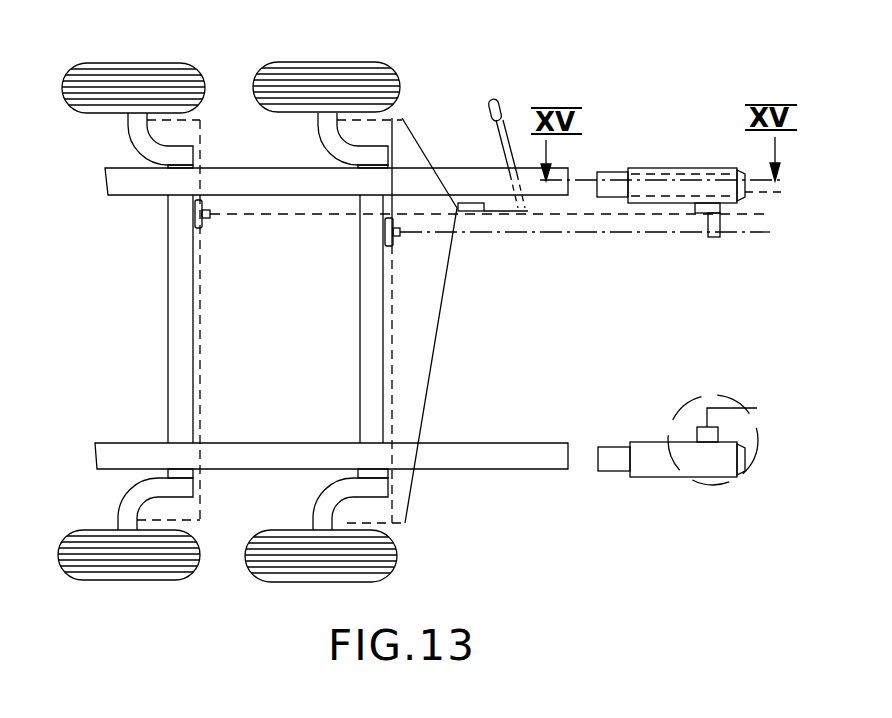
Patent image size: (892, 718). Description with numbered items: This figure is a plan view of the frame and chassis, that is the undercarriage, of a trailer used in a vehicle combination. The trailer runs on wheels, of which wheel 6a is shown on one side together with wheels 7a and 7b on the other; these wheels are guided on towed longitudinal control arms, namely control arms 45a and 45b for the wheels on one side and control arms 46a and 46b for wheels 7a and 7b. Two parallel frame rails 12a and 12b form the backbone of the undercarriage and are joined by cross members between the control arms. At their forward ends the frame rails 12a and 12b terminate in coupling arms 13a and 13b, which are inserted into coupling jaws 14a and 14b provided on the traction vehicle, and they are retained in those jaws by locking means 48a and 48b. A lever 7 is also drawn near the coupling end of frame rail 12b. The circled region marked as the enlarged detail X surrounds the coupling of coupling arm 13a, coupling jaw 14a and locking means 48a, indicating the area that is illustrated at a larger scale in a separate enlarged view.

The wheel 7b is at (145, 66).
The wheel 7a is at (118, 570).
The wheel 6a is at (314, 570).
The towed longitudinal control arm 46b is at (128, 134).
The towed longitudinal control arm 46a is at (124, 498).
The towed longitudinal control arm 45b is at (318, 134).
The towed longitudinal control arm 45a is at (320, 498).
The frame rail 12b is at (460, 172).
The frame rail 12a is at (515, 462).
The control lever 7 is at (506, 132).
The coupling arm 13b is at (608, 172).
The coupling arm 13a is at (612, 466).
The coupling jaw 14b is at (697, 170).
The coupling jaw 14a is at (665, 465).
The locking means 48b is at (715, 216).
The locking means 48a is at (700, 430).
The enlarged detail X is at (738, 440).